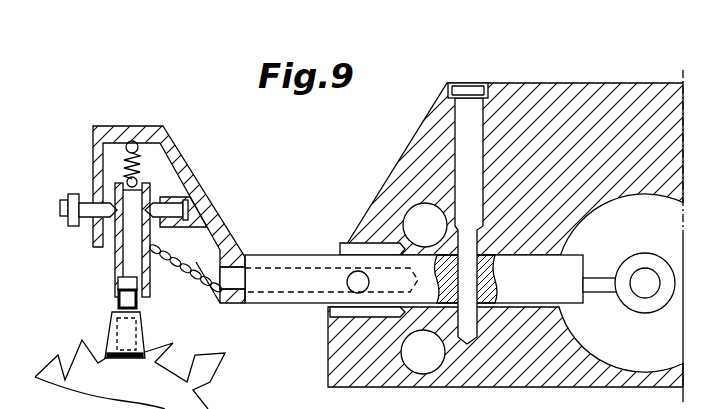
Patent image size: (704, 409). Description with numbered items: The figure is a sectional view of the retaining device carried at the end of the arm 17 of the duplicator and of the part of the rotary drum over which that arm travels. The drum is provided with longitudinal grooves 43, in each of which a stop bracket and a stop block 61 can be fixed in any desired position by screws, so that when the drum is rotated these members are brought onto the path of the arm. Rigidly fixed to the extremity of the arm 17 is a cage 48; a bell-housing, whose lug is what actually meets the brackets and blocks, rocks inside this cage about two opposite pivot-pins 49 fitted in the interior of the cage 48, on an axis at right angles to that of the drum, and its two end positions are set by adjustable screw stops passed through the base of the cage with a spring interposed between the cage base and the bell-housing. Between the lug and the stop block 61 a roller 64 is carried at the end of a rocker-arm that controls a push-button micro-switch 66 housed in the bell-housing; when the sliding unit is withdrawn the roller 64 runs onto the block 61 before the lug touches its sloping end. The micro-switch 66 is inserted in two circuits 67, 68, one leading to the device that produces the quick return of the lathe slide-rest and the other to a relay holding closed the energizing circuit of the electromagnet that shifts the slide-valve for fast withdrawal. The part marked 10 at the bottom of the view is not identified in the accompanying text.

The ratchet wheel 10 is at (149, 366).
The arm 17 is at (287, 264).
The grooves 43 is at (72, 362).
The cage 48 is at (168, 148).
The pivot-pins 49 is at (88, 208).
The stop block 61 is at (143, 335).
The roller 64 is at (118, 296).
The micro-switch 66 is at (113, 252).
The circuit 67 is at (196, 258).
The circuit 68 is at (207, 280).